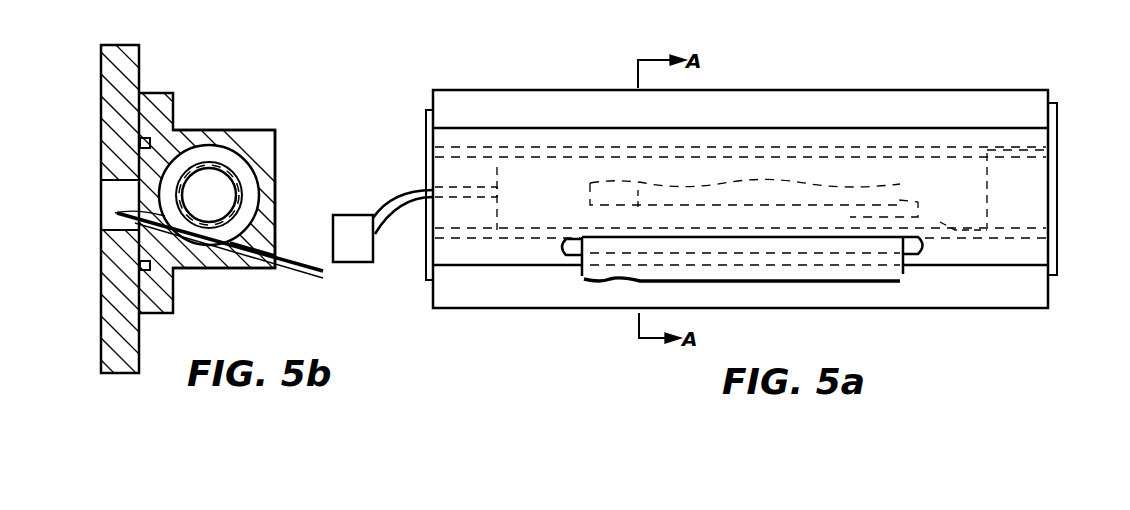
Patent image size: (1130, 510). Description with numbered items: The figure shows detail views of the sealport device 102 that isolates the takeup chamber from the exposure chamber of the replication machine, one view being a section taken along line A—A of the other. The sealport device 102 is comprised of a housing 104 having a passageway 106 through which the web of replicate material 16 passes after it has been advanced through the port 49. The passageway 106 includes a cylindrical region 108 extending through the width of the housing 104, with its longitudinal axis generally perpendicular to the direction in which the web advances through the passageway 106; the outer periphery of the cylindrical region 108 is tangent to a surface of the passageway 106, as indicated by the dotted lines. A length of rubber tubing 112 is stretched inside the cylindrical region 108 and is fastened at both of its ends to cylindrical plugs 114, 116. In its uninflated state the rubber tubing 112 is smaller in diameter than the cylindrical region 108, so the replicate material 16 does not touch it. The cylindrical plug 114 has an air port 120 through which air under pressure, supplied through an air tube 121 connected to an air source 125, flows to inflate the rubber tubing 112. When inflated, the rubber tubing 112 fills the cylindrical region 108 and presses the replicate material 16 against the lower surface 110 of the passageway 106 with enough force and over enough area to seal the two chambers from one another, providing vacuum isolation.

In FIG. 5b, the replicate material 16 is at (312, 273).
In FIG. 5a, the replicate material 16 is at (905, 270).
In FIG. 5b, the port 49 is at (105, 196).
In FIG. 5b, the sealport device 102 is at (258, 112).
In FIG. 5a, the sealport device 102 is at (425, 95).
In FIG. 5b, the housing 104 is at (229, 140).
In FIG. 5a, the housing 104 is at (1040, 254).
In FIG. 5b, the passageway 106 is at (277, 252).
In FIG. 5a, the passageway 106 is at (560, 248).
In FIG. 5b, the cylindrical region 108 is at (248, 184).
In FIG. 5a, the cylindrical region 108 is at (945, 158).
In FIG. 5b, the lower surface 110 is at (118, 214).
In FIG. 5b, the rubber tubing 112 is at (215, 228).
In FIG. 5a, the rubber tubing 112 is at (567, 141).
In FIG. 5a, the cylindrical plug 114 is at (477, 141).
In FIG. 5a, the cylindrical plug 116 is at (1005, 233).
In FIG. 5a, the air port 120 is at (467, 197).
In FIG. 5a, the air tube 121 is at (393, 200).
In FIG. 5a, the air source 125 is at (373, 258).